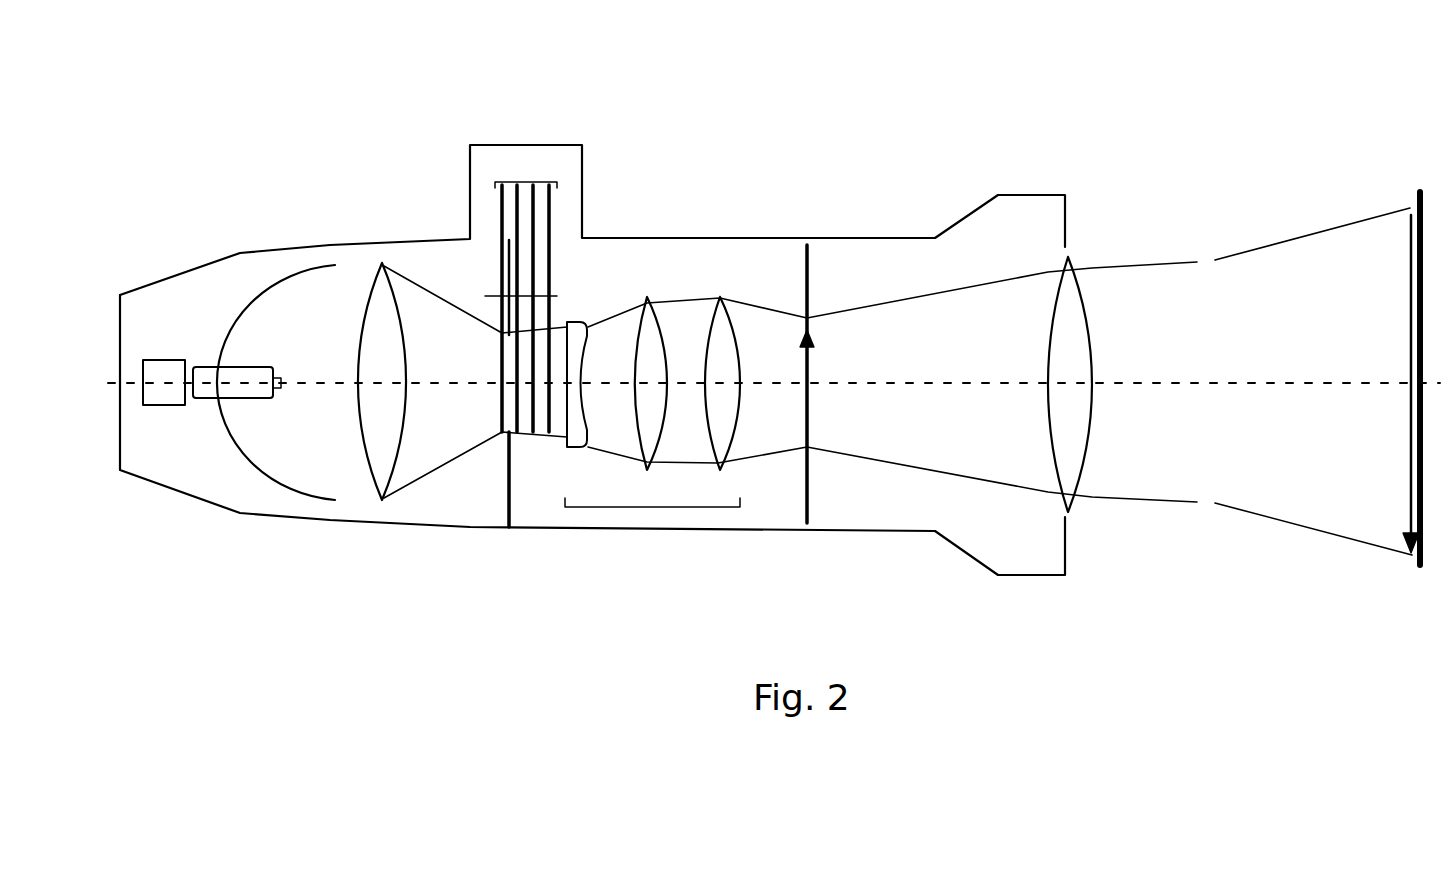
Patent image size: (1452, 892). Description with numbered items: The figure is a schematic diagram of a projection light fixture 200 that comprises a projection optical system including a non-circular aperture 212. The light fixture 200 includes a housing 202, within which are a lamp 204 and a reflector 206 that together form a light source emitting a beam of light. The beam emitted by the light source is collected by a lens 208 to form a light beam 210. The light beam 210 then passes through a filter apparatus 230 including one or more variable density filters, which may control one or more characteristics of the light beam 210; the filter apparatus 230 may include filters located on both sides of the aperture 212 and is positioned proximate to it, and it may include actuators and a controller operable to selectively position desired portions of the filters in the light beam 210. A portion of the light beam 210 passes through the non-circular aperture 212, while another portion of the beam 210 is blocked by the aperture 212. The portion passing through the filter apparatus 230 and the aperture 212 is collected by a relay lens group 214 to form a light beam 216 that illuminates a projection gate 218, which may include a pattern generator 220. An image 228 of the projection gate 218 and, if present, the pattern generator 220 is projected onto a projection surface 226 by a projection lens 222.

The projection light fixture 200 is at (762, 103).
The housing 202 is at (663, 235).
The lamp 204 is at (200, 363).
The reflector 206 is at (250, 307).
The lens 208 is at (386, 266).
The light beam 210 is at (452, 460).
The non-circular aperture 212 is at (508, 370).
The relay lens group 214 is at (652, 508).
The light beam 216 is at (775, 312).
The projection gate 218 is at (808, 287).
The pattern generator 220 is at (808, 365).
The projection lens 222 is at (1070, 255).
The projection surface 226 is at (1420, 190).
The image 228 is at (1408, 238).
The filter apparatus 230 is at (527, 178).